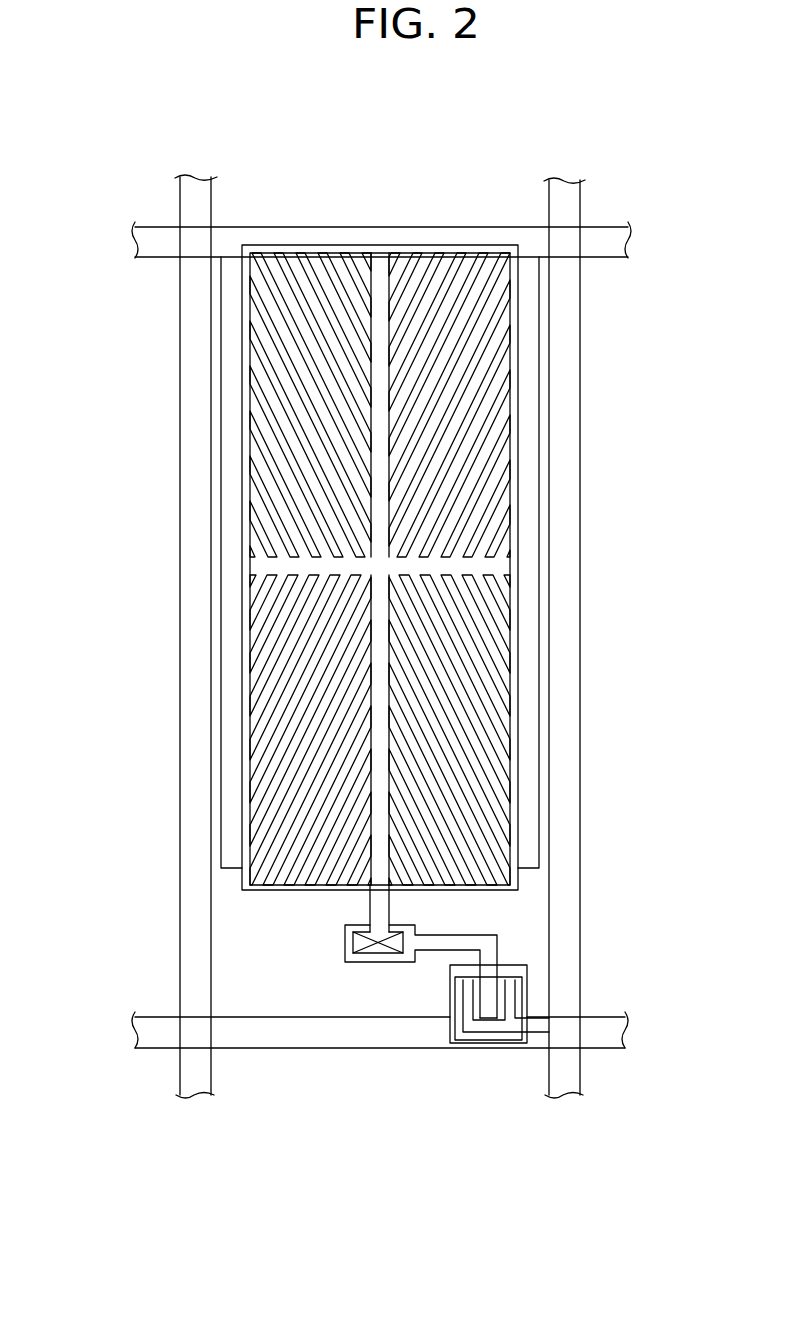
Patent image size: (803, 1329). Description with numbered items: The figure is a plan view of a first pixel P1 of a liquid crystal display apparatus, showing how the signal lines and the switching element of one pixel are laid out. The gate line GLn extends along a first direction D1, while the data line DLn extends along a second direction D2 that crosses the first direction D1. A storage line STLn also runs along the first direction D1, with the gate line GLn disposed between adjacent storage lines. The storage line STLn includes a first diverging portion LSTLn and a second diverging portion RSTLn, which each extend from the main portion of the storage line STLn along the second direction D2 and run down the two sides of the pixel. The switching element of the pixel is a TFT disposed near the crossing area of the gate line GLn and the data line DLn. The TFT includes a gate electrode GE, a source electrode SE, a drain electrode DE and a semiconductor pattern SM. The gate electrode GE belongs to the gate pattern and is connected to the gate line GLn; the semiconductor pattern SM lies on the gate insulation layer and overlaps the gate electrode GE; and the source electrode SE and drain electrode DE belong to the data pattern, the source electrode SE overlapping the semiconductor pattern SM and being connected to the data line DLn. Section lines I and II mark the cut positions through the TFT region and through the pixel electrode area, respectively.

The first pixel P1 is at (290, 143).
The data line DLn is at (198, 185).
The storage line STLn is at (135, 240).
The gate line GLn is at (134, 1031).
The first diverging portion LSTLn is at (222, 778).
The second diverging portion RSTLn is at (538, 778).
The thin film transistor TFT is at (548, 1173).
The gate electrode GE is at (450, 996).
The source electrode SE is at (470, 1038).
The drain electrode DE is at (486, 1028).
The semiconductor pattern SM is at (521, 1040).
The cut line I-I' I is at (345, 942).
The cut line II is at (263, 545).
The first direction D1 is at (87, 1168).
The second direction D2 is at (87, 1168).